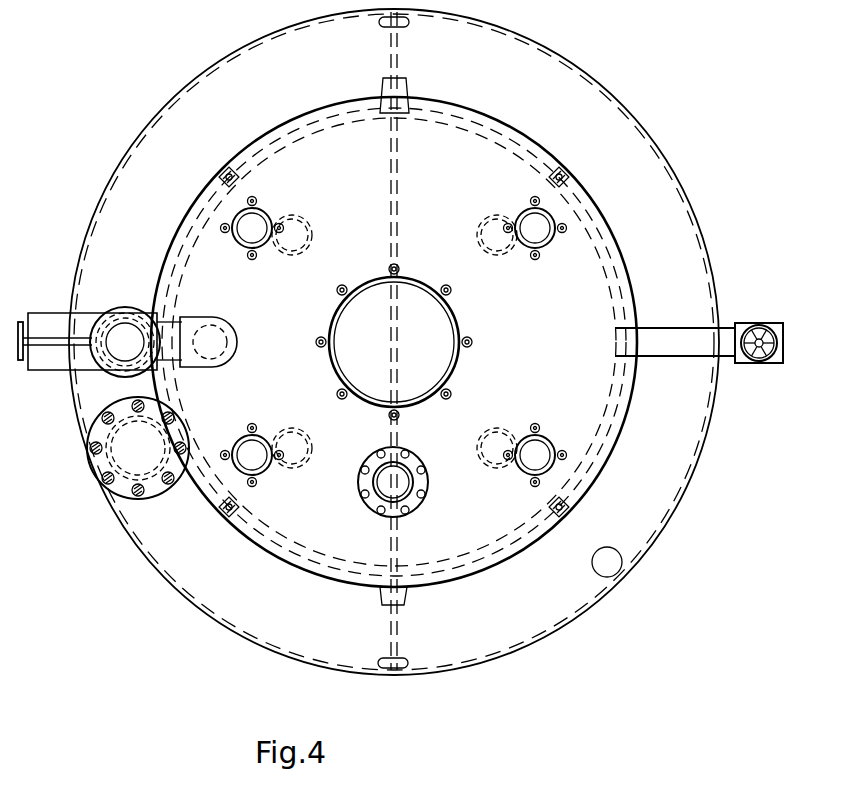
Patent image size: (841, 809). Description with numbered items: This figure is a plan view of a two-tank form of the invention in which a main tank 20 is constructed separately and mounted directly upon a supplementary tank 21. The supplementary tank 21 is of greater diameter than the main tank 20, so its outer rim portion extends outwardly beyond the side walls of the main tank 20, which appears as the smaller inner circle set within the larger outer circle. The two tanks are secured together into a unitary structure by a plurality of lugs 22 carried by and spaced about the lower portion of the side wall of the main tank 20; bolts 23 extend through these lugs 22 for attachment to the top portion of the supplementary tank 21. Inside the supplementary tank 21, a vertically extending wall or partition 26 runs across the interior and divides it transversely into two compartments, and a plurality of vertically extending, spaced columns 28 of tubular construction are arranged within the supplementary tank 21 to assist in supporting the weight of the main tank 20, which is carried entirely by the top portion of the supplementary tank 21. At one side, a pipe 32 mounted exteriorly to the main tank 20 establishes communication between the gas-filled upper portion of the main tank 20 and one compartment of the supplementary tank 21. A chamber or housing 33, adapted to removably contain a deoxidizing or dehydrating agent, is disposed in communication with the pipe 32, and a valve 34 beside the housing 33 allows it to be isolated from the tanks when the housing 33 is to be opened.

The main tank 20 is at (621, 256).
The supplementary tank 21 is at (706, 252).
The lugs 22 is at (565, 504).
The bolts 23 is at (560, 518).
The wall or partition 26 is at (397, 225).
The columns 28 is at (306, 217).
The pipe 32 is at (160, 331).
The chamber or housing 33 is at (42, 322).
The valve 34 is at (103, 358).